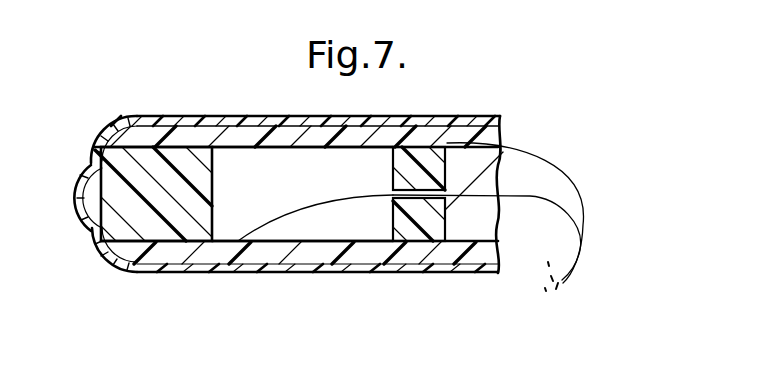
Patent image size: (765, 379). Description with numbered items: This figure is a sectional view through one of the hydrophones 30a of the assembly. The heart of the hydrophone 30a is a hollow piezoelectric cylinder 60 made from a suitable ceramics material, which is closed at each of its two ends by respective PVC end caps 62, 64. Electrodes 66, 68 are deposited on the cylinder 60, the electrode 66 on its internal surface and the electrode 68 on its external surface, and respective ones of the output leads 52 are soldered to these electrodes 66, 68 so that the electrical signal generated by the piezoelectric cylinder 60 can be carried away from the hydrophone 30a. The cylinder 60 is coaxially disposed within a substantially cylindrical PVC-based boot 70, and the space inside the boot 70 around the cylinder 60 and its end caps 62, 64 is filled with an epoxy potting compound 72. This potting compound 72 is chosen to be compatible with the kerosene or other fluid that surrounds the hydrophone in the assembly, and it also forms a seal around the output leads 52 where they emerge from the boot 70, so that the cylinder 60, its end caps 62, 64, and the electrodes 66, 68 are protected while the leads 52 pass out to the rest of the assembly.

The hydrophone 30a is at (220, 280).
The output leads 52 is at (527, 196).
The hollow piezoelectric cylinder 60 is at (308, 130).
The PVC end cap 62 is at (140, 177).
The PVC end cap 64 is at (414, 173).
The electrode 66 is at (368, 228).
The electrode 68 is at (212, 133).
The PVC-based boot 70 is at (461, 119).
The epoxy potting compound 72 is at (280, 137).